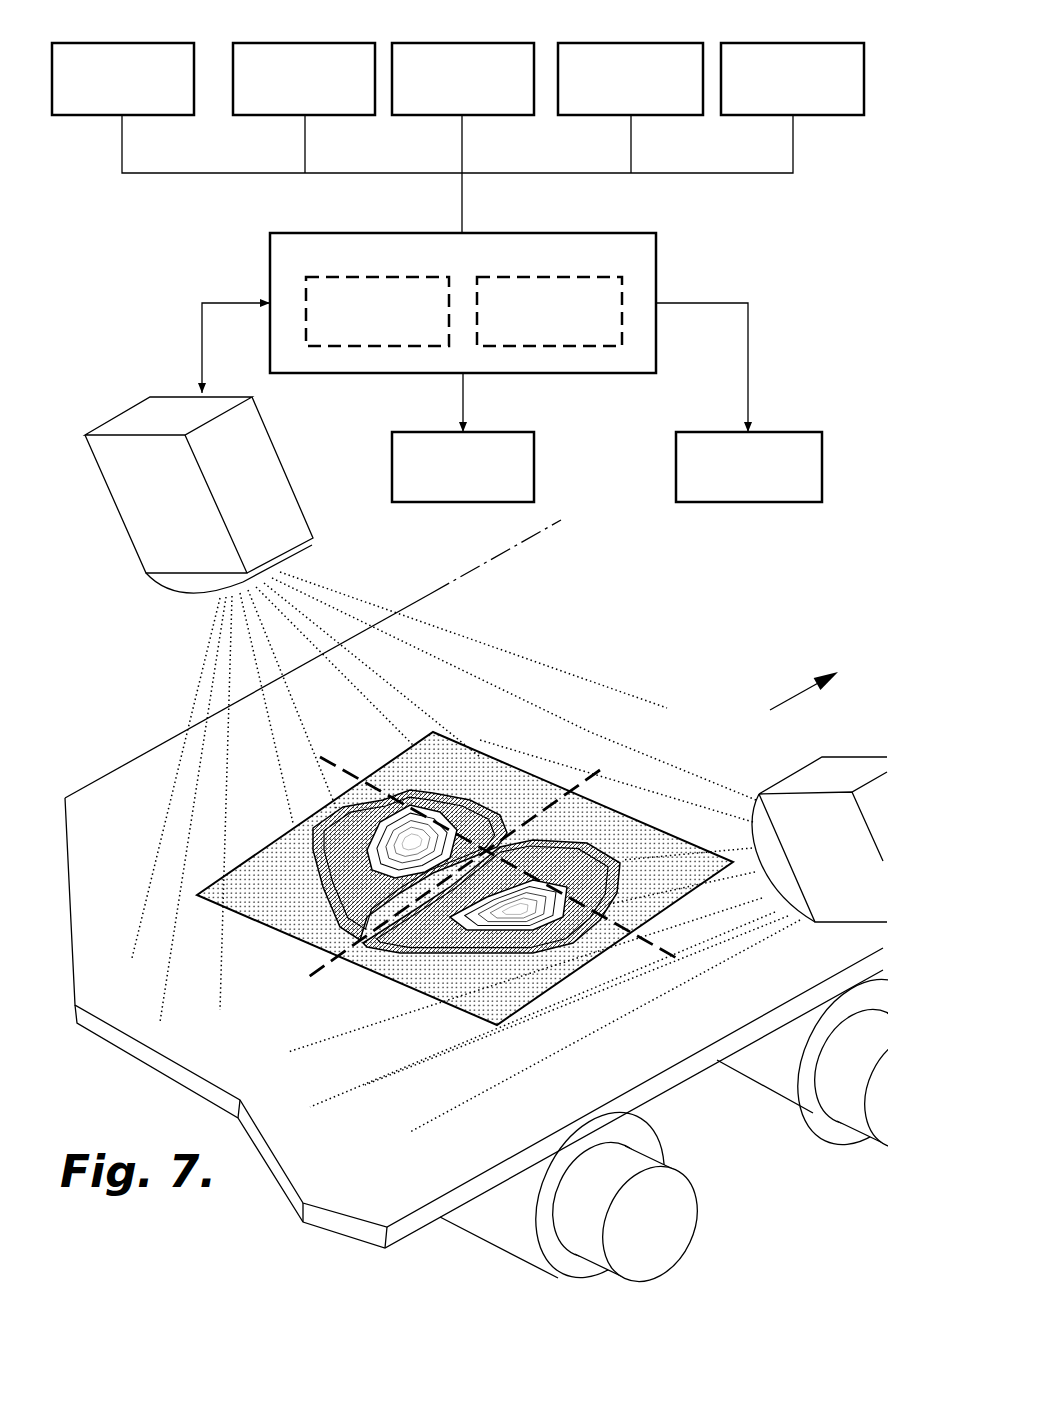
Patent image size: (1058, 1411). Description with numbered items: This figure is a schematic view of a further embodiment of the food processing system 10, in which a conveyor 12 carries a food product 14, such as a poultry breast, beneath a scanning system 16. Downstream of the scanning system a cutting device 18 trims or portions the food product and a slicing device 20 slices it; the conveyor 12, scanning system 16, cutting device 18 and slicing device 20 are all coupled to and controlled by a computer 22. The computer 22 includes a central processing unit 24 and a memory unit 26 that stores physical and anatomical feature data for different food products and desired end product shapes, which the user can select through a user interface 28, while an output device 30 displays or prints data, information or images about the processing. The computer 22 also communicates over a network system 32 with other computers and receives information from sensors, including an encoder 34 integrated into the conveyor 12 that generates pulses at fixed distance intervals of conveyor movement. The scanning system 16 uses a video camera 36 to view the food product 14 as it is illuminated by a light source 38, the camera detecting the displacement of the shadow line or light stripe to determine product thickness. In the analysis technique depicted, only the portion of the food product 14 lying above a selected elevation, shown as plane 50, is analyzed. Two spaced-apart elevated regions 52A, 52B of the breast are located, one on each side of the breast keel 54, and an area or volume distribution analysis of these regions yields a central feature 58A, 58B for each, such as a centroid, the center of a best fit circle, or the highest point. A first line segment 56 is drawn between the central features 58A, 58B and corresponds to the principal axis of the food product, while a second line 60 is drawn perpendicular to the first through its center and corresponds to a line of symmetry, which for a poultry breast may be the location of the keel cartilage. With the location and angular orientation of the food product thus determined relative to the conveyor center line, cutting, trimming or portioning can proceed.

The system 10 is at (94, 274).
The conveyor 12 is at (315, 43).
The food product 14 is at (340, 807).
The scanning system 16 is at (85, 418).
The cutting device 18 is at (473, 43).
The slicing device 20 is at (640, 43).
The computer 22 is at (499, 328).
The central processing unit 24 is at (336, 347).
The memory unit 26 is at (580, 347).
The user interface 28 is at (534, 468).
The output device 30 is at (822, 468).
The network system 32 is at (130, 43).
The encoder 34 is at (805, 43).
The video camera 36 is at (277, 483).
The light source 38 is at (806, 768).
The plane 50 is at (454, 737).
The elevated region 52A is at (307, 930).
The elevated region 52B is at (380, 970).
The breast keel 54 is at (500, 789).
The first line segment 56 is at (674, 948).
The central feature 58A is at (403, 800).
The central feature 58B is at (533, 880).
The second line 60 is at (586, 785).